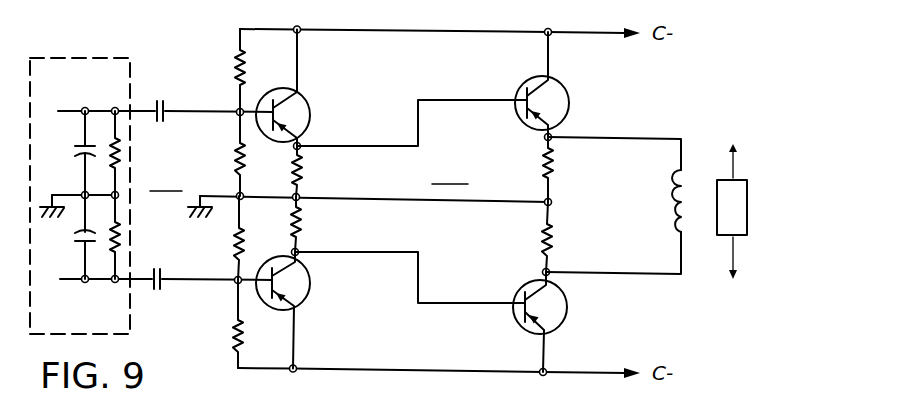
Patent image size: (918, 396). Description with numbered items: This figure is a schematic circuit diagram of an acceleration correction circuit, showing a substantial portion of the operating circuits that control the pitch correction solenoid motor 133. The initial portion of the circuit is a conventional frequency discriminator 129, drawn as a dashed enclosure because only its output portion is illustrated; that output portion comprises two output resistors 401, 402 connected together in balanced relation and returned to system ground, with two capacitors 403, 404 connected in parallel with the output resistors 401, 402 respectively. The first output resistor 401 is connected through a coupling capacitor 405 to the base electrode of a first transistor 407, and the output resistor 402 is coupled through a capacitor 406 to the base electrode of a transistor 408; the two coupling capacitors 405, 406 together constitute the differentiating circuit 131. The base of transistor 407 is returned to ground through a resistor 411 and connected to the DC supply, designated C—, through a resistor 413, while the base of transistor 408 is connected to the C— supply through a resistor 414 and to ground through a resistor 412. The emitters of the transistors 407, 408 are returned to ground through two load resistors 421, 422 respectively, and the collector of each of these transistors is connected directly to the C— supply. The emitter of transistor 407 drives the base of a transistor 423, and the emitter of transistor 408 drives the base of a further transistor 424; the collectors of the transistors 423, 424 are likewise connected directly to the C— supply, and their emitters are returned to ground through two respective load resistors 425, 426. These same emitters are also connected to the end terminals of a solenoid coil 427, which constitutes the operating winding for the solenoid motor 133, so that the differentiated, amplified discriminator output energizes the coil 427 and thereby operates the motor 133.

The frequency discriminator 129 is at (110, 58).
The differentiating circuit 131 is at (310, 177).
The pitch correction solenoid motor 133 is at (705, 163).
The output resistor 401 is at (122, 151).
The output resistor 402 is at (122, 236).
The capacitor 403 is at (84, 151).
The capacitor 404 is at (90, 240).
The coupling capacitor 405 is at (150, 78).
The coupling capacitor 406 is at (152, 290).
The transistor 407 is at (310, 108).
The transistor 408 is at (306, 298).
The resistor 411 is at (237, 158).
The resistor 412 is at (236, 246).
The resistor 413 is at (238, 62).
The resistor 414 is at (236, 336).
The load resistor 421 is at (301, 171).
The load resistor 422 is at (300, 224).
The transistor 423 is at (568, 104).
The transistor 424 is at (566, 310).
The load resistor 425 is at (553, 165).
The load resistor 426 is at (552, 250).
The solenoid coil 427 is at (668, 192).